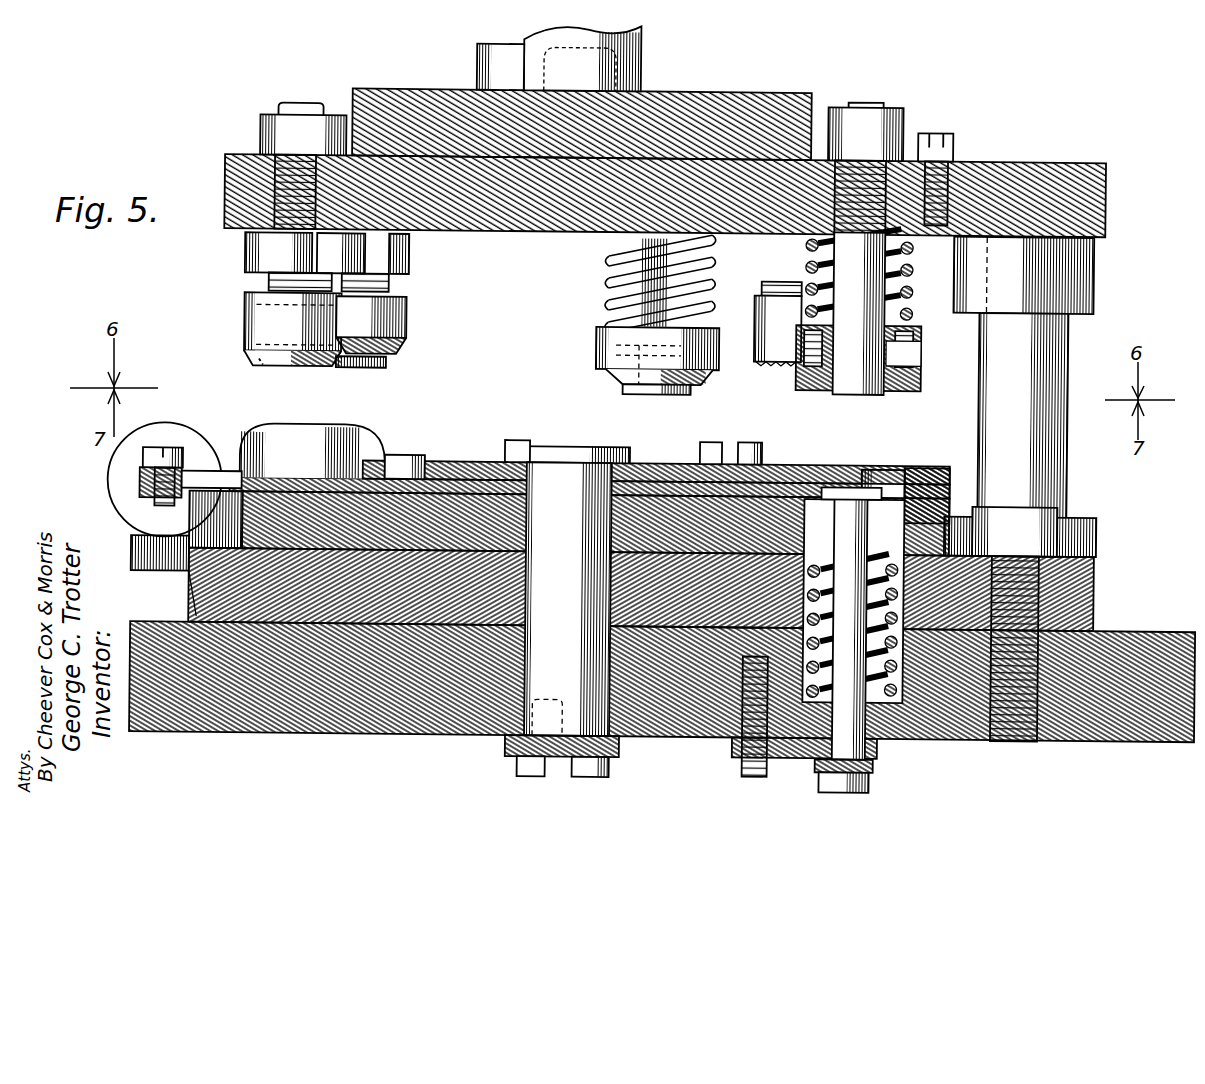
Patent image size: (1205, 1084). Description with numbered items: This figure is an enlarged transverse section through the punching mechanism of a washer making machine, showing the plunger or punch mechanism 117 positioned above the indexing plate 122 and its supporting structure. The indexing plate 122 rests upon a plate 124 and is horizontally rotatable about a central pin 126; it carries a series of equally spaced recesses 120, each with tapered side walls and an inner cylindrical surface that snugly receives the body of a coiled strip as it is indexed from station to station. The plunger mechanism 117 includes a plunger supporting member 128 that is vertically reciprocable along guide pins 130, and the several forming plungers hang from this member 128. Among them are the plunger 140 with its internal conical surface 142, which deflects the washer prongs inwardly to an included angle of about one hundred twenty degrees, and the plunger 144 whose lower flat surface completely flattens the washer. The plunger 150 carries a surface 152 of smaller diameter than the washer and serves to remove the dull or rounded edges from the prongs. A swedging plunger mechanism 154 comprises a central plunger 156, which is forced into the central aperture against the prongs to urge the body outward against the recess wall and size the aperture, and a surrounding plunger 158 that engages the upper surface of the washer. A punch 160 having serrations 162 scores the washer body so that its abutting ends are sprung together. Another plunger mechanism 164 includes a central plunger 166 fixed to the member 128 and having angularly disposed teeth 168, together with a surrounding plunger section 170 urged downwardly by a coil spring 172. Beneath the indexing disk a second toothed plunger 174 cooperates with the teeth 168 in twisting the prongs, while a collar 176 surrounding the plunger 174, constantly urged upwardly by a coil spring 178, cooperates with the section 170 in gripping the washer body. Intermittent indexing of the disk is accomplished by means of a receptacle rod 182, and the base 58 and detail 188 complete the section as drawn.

The base 58 is at (362, 702).
The plunger or punch mechanism 117 is at (730, 77).
The recess 120 is at (203, 482).
The indexing plate 122 is at (790, 480).
The plate 124 is at (428, 502).
The central pin or shaft 126 is at (566, 608).
The plunger supporting member 128 is at (992, 186).
The guide pins 130 is at (995, 386).
The plunger 140 is at (262, 330).
The internal conical surface 142 is at (268, 366).
The plunger 144 is at (368, 300).
The plunger 150 is at (400, 320).
The surface 152 is at (360, 366).
The plunger mechanism 154 is at (588, 349).
The central plunger 156 is at (698, 300).
The surrounding plunger 158 is at (612, 352).
The punch or plunger 160 is at (762, 348).
The serrations 162 is at (778, 364).
The plunger mechanism 164 is at (808, 395).
The central plunger 166 is at (865, 248).
The teeth 168 is at (858, 380).
The surrounding plunger section 170 is at (905, 378).
The coil spring 172 is at (905, 298).
The second toothed plunger 174 is at (845, 500).
The collar 176 is at (928, 474).
The coil spring 178 is at (905, 716).
The receptacle rod 182 is at (152, 500).
The bracket 188 is at (215, 447).